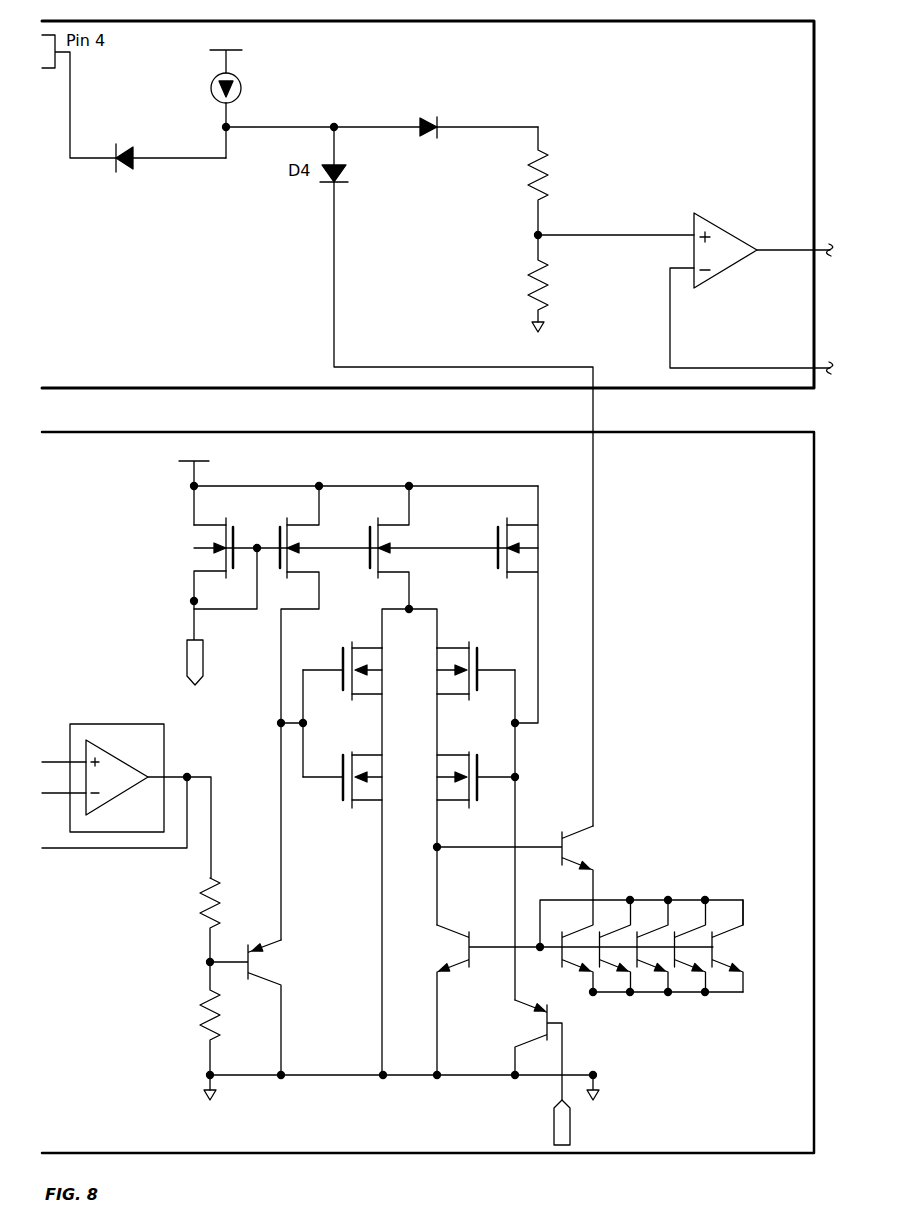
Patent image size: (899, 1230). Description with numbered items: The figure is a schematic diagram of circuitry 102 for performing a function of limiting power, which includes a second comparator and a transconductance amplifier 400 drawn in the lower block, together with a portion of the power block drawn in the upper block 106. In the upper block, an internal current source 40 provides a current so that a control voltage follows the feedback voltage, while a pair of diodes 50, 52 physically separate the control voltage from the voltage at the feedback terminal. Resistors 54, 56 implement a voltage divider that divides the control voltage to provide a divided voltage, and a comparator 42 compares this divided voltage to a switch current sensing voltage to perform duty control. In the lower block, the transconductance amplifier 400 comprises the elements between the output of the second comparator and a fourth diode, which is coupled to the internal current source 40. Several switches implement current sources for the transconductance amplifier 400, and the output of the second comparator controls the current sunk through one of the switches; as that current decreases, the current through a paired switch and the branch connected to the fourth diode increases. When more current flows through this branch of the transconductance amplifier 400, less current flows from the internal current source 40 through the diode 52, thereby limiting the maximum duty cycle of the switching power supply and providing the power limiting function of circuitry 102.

The internal current source 40 is at (211, 89).
The diode 50 is at (134, 163).
The diode 52 is at (420, 125).
The resistor 54 is at (526, 188).
The resistor 56 is at (526, 296).
The comparator 42 is at (712, 278).
The current sensing circuit block 106 is at (727, 390).
The transconductance amplifier 400 is at (425, 1143).
The circuitry for performing a function of limiting power 102 is at (672, 1155).